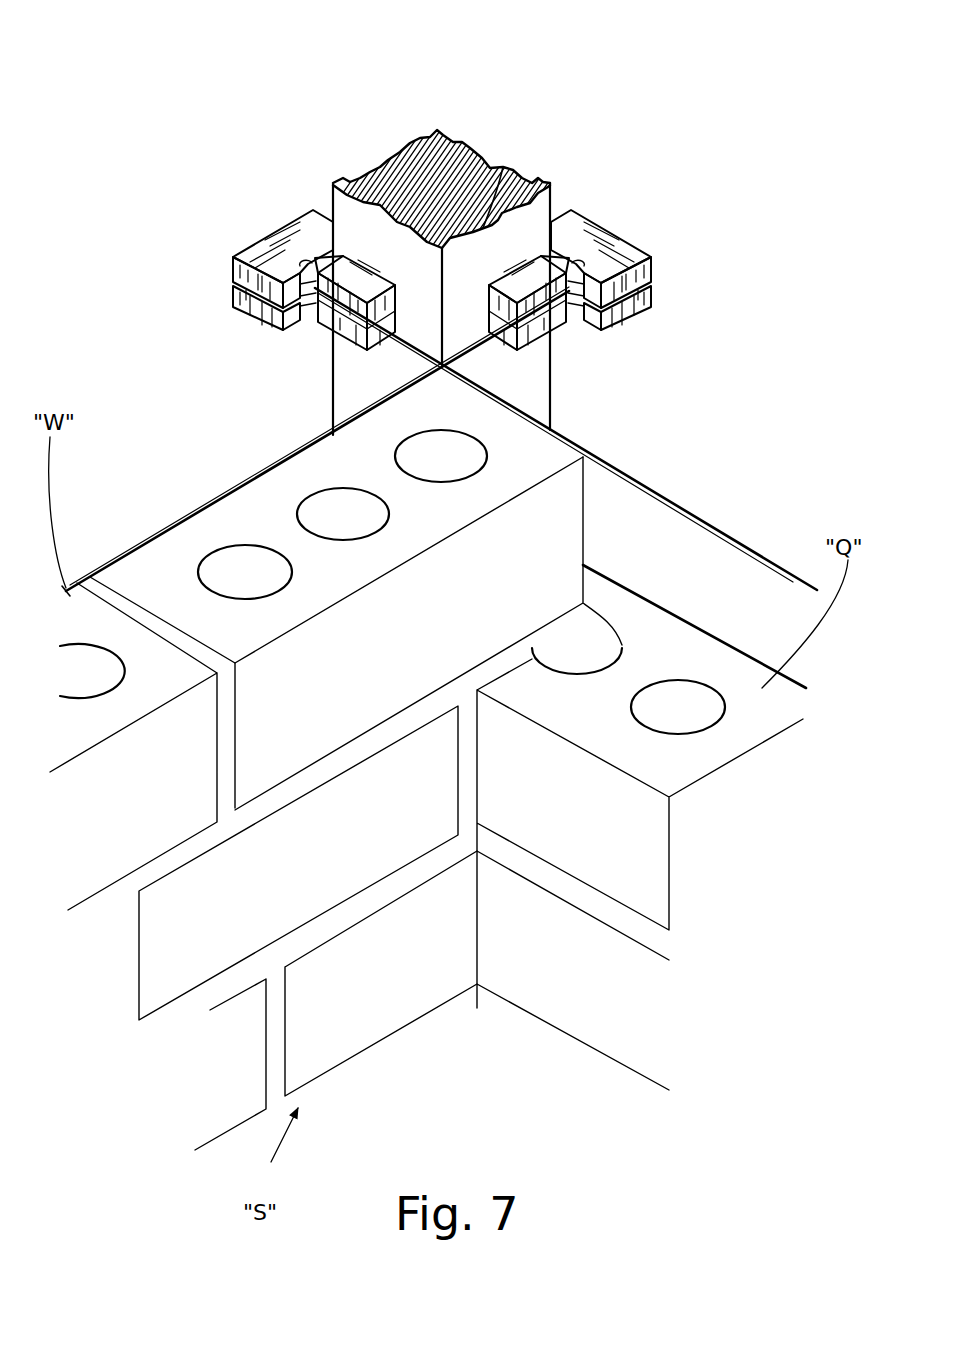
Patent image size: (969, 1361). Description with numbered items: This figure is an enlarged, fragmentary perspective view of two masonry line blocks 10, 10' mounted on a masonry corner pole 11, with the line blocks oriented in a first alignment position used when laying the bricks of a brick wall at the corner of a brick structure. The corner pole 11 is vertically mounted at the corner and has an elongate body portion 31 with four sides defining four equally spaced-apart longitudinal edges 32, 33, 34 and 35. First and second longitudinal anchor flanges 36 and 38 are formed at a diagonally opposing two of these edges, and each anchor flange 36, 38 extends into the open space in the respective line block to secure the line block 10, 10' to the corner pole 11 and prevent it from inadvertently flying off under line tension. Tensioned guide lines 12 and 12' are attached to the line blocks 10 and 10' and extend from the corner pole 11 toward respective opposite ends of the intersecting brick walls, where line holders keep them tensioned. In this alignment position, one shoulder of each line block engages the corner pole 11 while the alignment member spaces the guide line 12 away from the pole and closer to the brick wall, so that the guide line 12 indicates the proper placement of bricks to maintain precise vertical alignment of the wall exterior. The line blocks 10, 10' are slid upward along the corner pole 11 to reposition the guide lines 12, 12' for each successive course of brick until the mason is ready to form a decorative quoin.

The masonry line block 10 is at (628, 201).
The masonry line block 10' is at (275, 182).
The masonry corner pole 11 is at (582, 385).
The guide line 12 is at (315, 441).
The guide line 12' is at (566, 439).
The elongate body portion 31 is at (460, 140).
The longitudinal edge 32 is at (551, 203).
The longitudinal edge 33 is at (441, 268).
The longitudinal edge 34 is at (437, 130).
The longitudinal edge 35 is at (330, 198).
The first longitudinal anchor flange 36 is at (548, 178).
The second longitudinal anchor flange 38 is at (330, 193).